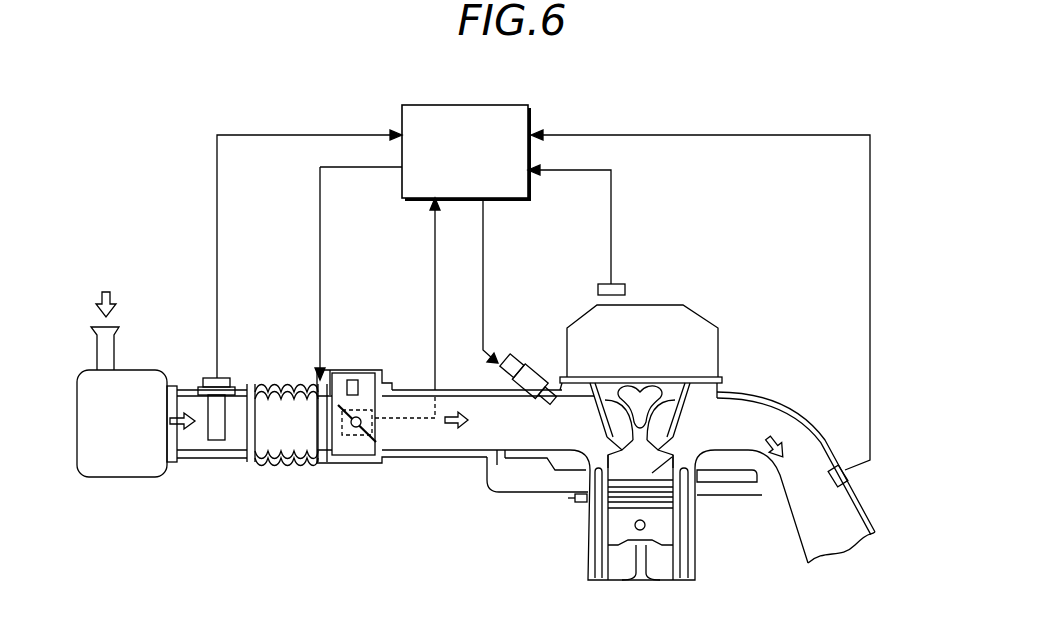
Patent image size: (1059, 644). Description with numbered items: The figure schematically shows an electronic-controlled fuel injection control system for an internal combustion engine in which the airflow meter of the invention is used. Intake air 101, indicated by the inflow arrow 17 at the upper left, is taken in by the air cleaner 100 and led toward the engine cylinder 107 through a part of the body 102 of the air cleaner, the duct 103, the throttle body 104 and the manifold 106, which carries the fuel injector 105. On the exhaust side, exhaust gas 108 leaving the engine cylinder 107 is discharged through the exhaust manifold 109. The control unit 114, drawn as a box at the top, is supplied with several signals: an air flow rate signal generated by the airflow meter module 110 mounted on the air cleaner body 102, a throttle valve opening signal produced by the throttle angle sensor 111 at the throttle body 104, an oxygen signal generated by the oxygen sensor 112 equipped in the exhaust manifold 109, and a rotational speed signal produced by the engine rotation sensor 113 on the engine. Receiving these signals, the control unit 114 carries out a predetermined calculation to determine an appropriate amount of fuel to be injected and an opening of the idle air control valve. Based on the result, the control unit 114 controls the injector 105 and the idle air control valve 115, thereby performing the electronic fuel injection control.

The intake air flow arrow 17 is at (98, 292).
The intake air 101 is at (115, 292).
The air cleaner 100 is at (128, 378).
The body of the air cleaner 102 is at (212, 458).
The airflow meter module 110 is at (208, 380).
The duct 103 is at (272, 382).
The idle air control valve 115 is at (312, 378).
The throttle body 104 is at (360, 462).
The throttle angle sensor 111 is at (345, 430).
The manifold 106 is at (447, 383).
The fuel injector 105 is at (510, 350).
The engine rotation sensor 113 is at (628, 288).
The control unit 114 is at (530, 118).
The engine cylinder 107 is at (695, 420).
The exhaust gas 108 is at (780, 432).
The exhaust manifold 109 is at (806, 425).
The oxygen sensor 112 is at (848, 465).